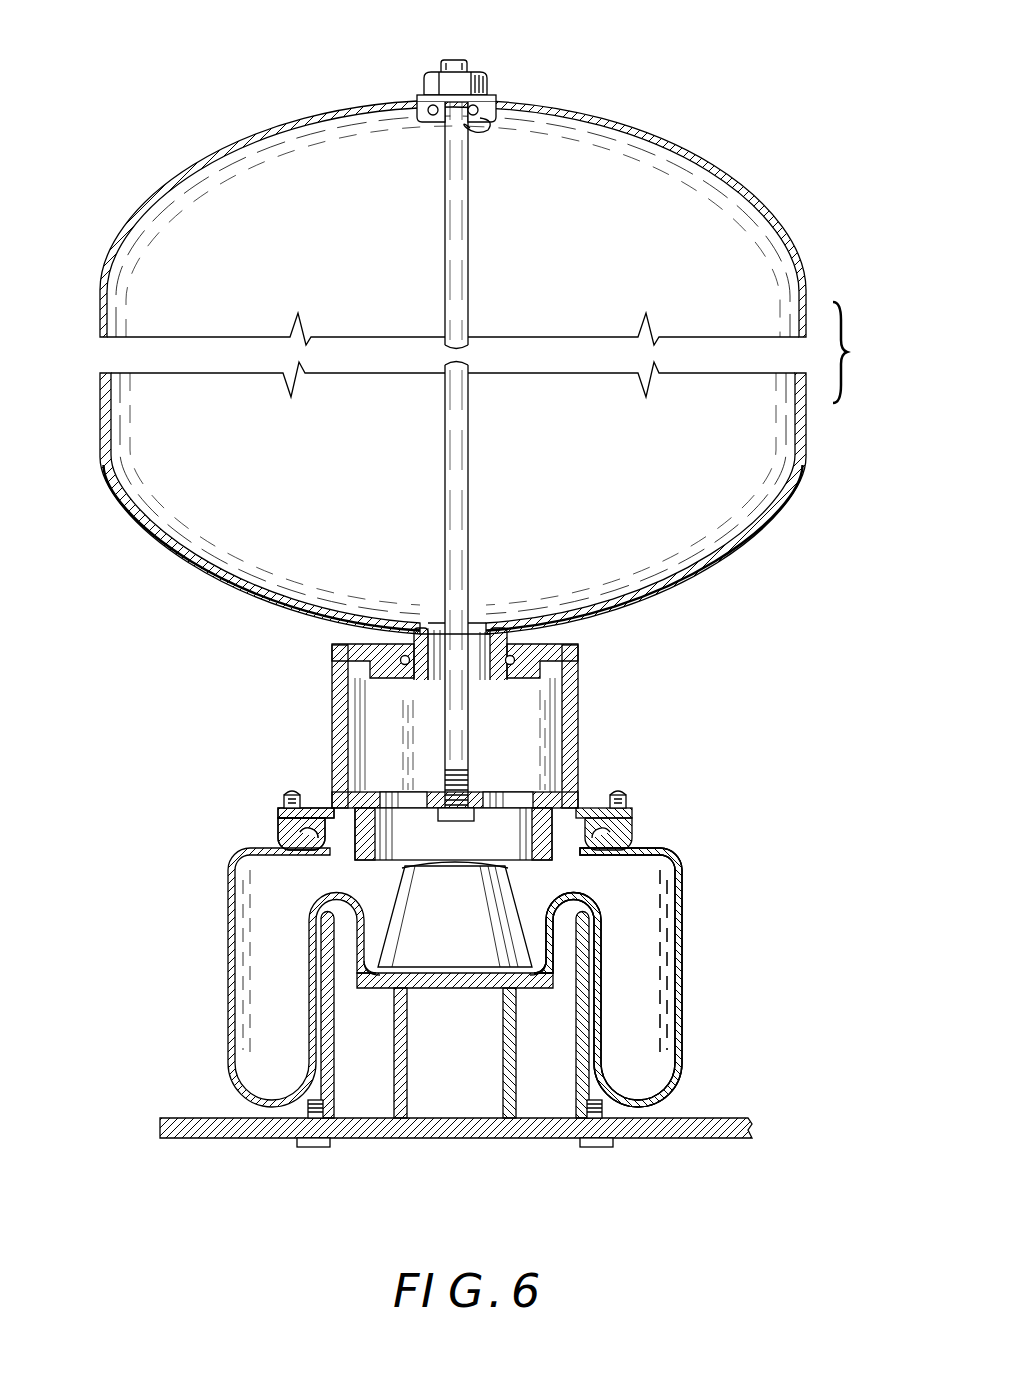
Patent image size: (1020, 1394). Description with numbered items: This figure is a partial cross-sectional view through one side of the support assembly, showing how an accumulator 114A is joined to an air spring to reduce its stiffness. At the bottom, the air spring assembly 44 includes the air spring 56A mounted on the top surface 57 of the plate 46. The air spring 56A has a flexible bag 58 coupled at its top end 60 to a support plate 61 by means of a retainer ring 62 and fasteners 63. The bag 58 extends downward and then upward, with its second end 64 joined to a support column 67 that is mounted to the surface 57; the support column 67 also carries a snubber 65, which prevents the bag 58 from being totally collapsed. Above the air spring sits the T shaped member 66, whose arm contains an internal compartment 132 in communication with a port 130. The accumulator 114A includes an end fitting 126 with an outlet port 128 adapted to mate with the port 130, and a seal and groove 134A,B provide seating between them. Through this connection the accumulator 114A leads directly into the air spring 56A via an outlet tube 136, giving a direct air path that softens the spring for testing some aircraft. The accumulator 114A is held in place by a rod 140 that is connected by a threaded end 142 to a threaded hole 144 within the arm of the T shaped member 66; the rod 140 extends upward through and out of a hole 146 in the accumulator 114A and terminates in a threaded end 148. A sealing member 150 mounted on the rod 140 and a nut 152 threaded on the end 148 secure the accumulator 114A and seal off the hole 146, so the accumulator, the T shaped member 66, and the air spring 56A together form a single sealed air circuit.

The accumulator 114A is at (735, 172).
The rod 140 is at (445, 510).
The threaded end 148 is at (458, 60).
The nut 152 is at (438, 86).
The sealing member 150 is at (420, 108).
The hole 146 is at (488, 118).
The T shaped member 66 is at (583, 697).
The port 130 is at (494, 680).
The outlet port 128 is at (400, 664).
The seal and groove 134A,B is at (412, 645).
The end fitting 126 is at (548, 637).
The internal compartment 132 is at (540, 740).
The outlet tube 136 is at (405, 780).
The threaded hole 144 is at (470, 790).
The threaded end 142 is at (432, 816).
The support plate 61 is at (325, 810).
The retainer ring 62 is at (277, 830).
The top end 60 is at (635, 858).
The fasteners 63 is at (284, 800).
The air spring assembly 44 is at (684, 907).
The air spring 56A is at (684, 975).
The flexible bag 58 is at (684, 1035).
The second end 64 is at (405, 956).
The snubber 65 is at (405, 873).
The support column 67 is at (407, 1092).
The plate 46 is at (735, 1118).
The top surface 57 is at (300, 1115).